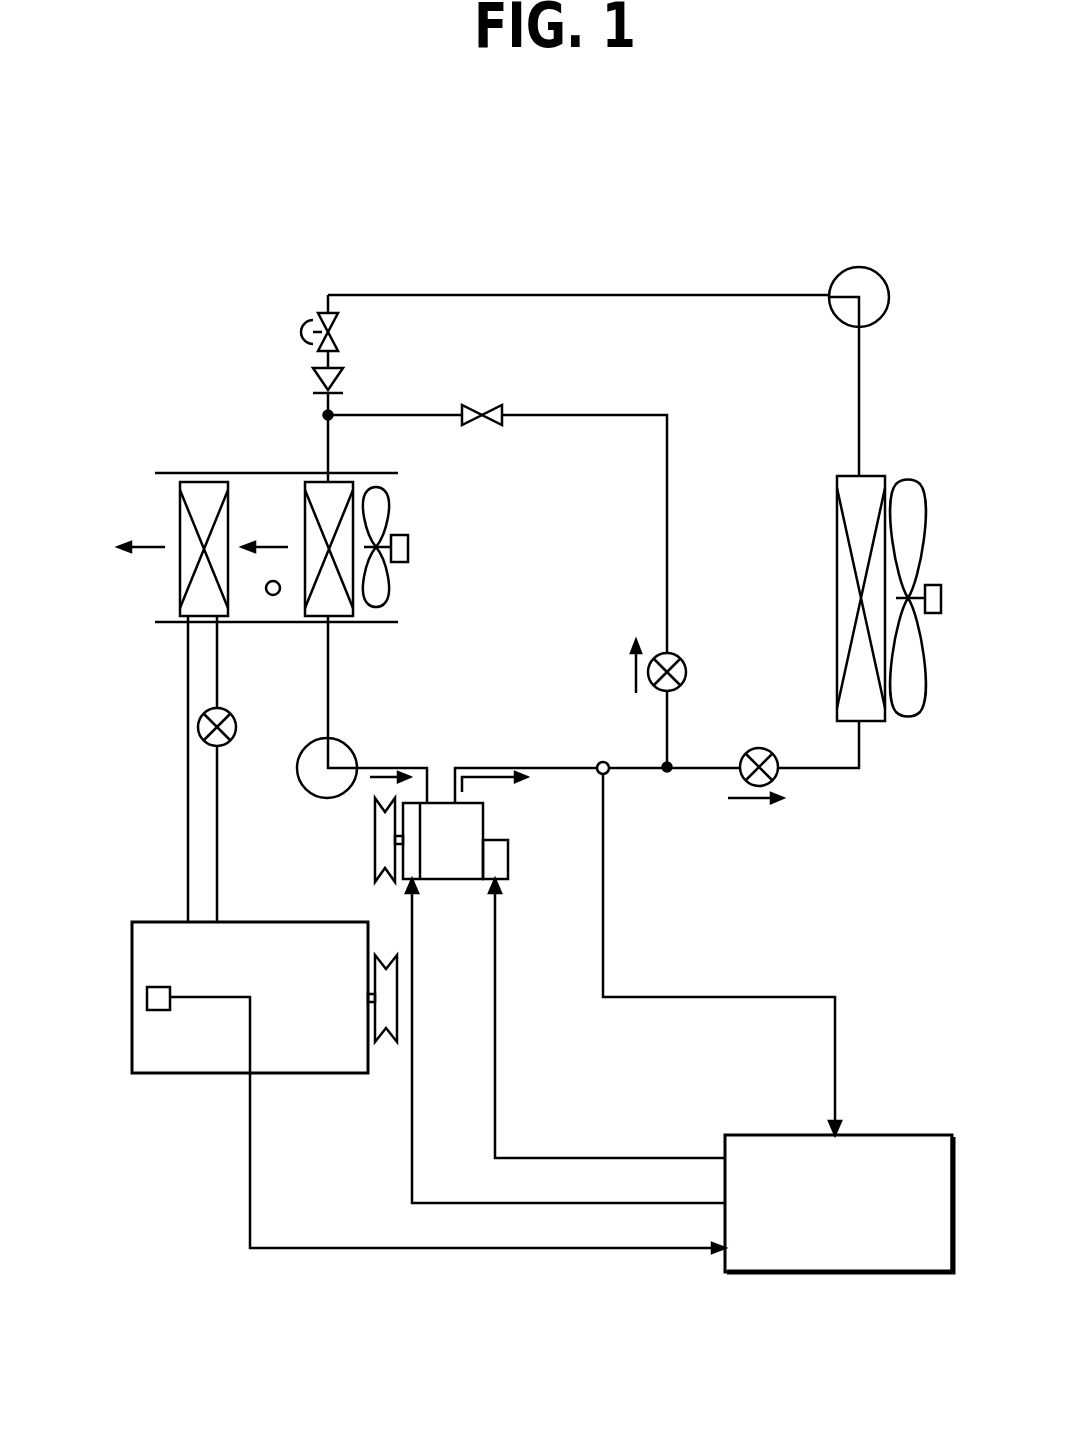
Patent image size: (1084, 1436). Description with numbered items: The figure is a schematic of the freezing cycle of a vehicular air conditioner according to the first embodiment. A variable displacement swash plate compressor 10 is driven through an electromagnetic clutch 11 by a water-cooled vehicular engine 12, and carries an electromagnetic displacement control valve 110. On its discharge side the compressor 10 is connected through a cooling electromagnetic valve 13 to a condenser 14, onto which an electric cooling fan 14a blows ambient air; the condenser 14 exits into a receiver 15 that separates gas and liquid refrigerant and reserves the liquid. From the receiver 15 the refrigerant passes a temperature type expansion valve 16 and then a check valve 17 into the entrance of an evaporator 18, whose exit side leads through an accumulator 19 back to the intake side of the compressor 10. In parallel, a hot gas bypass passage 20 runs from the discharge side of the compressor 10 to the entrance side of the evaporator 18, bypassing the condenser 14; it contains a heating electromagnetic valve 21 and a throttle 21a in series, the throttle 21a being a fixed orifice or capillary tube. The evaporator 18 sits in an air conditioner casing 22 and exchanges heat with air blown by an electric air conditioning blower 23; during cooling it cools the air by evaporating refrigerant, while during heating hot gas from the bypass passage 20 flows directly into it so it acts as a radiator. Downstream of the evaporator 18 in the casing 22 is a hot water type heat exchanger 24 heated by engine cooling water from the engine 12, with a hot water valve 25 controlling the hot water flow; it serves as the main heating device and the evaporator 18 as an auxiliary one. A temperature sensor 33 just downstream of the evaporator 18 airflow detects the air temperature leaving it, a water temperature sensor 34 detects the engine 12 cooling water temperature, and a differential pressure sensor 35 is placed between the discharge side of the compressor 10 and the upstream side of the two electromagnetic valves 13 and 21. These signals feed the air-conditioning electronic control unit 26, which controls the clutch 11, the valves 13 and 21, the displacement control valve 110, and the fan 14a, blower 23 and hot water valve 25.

The compressor 10 is at (466, 825).
The electromagnetic clutch 11 is at (415, 843).
The electromagnetic displacement control valve 110 is at (492, 857).
The vehicular engine 12 is at (216, 1050).
The cooling electromagnetic valve 13 is at (757, 748).
The condenser 14 is at (866, 705).
The cooling fan 14a is at (906, 482).
The receiver 15 is at (868, 272).
The temperature type expansion valve 16 is at (312, 318).
The check valve 17 is at (314, 378).
The evaporator 18 is at (322, 490).
The accumulator 19 is at (345, 748).
The hot gas bypass passage 20 is at (594, 413).
The heating electromagnetic valve 21 is at (686, 662).
The throttle 21a is at (478, 405).
The air conditioner casing 22 is at (200, 470).
The air conditioning blower 23 is at (388, 520).
The hot water type heat exchanger 24 is at (182, 586).
The hot water valve 25 is at (200, 727).
The air-conditioning electronic control unit 26 is at (906, 1135).
The temperature sensor 33 is at (273, 596).
The water temperature sensor 34 is at (158, 1012).
The differential pressure sensor 35 is at (602, 760).